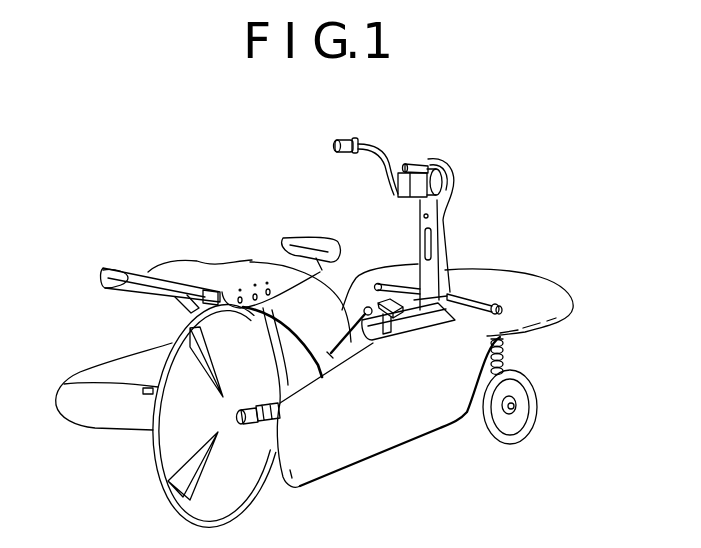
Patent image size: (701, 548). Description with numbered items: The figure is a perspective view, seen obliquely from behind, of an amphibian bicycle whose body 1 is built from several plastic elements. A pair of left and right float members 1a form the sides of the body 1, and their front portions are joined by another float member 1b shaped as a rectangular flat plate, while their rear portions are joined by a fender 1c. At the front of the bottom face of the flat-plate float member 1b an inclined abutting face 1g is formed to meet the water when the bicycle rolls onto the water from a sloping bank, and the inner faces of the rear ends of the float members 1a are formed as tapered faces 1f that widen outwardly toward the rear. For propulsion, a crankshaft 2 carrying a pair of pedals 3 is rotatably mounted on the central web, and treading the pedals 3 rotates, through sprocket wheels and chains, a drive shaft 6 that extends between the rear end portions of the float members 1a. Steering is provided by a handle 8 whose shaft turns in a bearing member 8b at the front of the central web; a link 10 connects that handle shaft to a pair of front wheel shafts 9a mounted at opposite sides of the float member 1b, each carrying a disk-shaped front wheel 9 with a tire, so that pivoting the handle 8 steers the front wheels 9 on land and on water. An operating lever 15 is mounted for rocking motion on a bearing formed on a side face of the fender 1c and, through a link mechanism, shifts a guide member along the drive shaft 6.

The body 1 is at (379, 405).
The float members 1a is at (122, 358).
The float member 1b is at (537, 292).
The fender 1c is at (229, 270).
The tapered faces 1f is at (88, 418).
The abutting face 1g is at (547, 333).
The crankshaft 2 is at (418, 392).
The pedals 3 is at (447, 393).
The drive shaft 6 is at (255, 427).
The handle 8 is at (390, 150).
The bearing member 8b is at (440, 246).
The front wheel 9 is at (522, 418).
The front wheel shafts 9a is at (510, 350).
The link 10 is at (485, 294).
The operating lever 15 is at (346, 290).